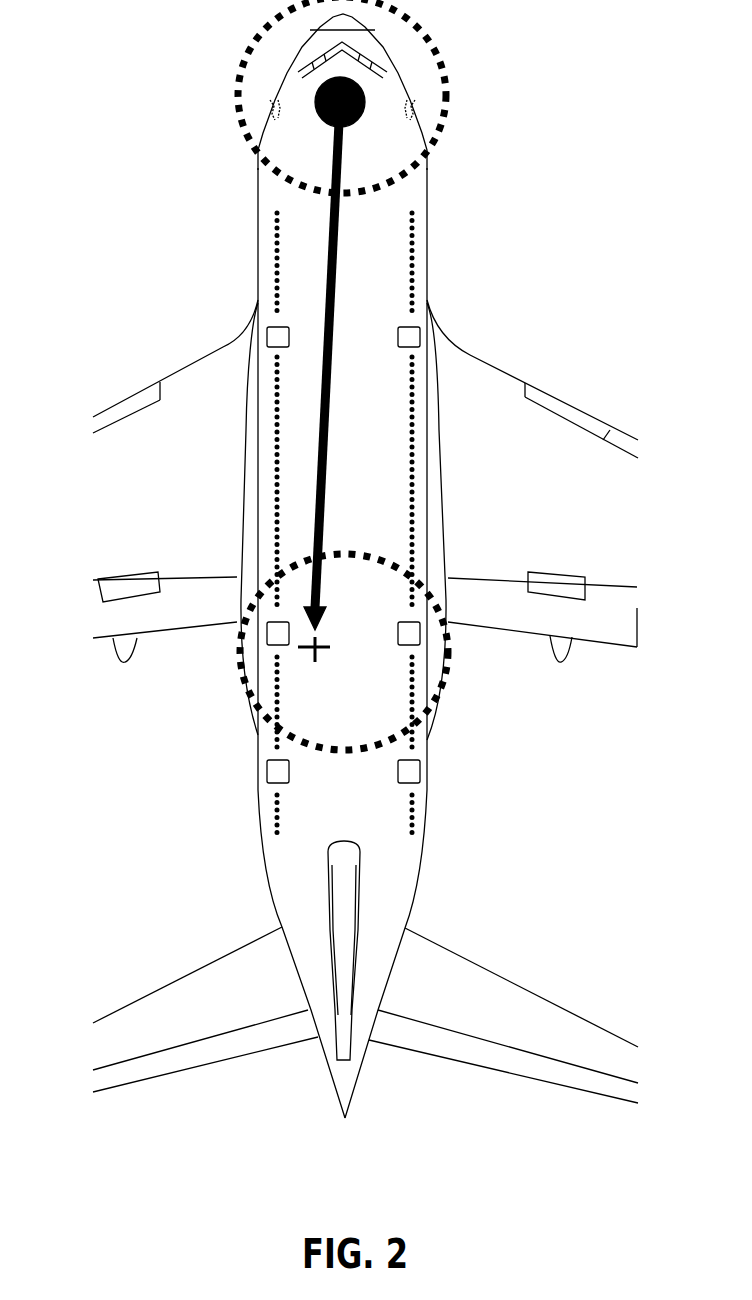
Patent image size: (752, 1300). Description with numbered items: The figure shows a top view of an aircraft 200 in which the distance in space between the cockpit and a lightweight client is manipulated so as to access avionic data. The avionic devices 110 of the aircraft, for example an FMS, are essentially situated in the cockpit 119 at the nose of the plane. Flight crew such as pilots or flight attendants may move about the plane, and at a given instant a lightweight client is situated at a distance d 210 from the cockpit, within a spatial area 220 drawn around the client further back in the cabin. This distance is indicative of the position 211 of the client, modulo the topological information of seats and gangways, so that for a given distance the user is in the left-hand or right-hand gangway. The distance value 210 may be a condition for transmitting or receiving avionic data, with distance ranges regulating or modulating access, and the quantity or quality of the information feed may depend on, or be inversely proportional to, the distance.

The avionic devices 110 is at (438, 42).
The cockpit 119 is at (363, 101).
The aircraft 200 is at (456, 263).
The distance d 210 is at (388, 434).
The position 211 is at (327, 662).
The spatial area 220 is at (455, 670).